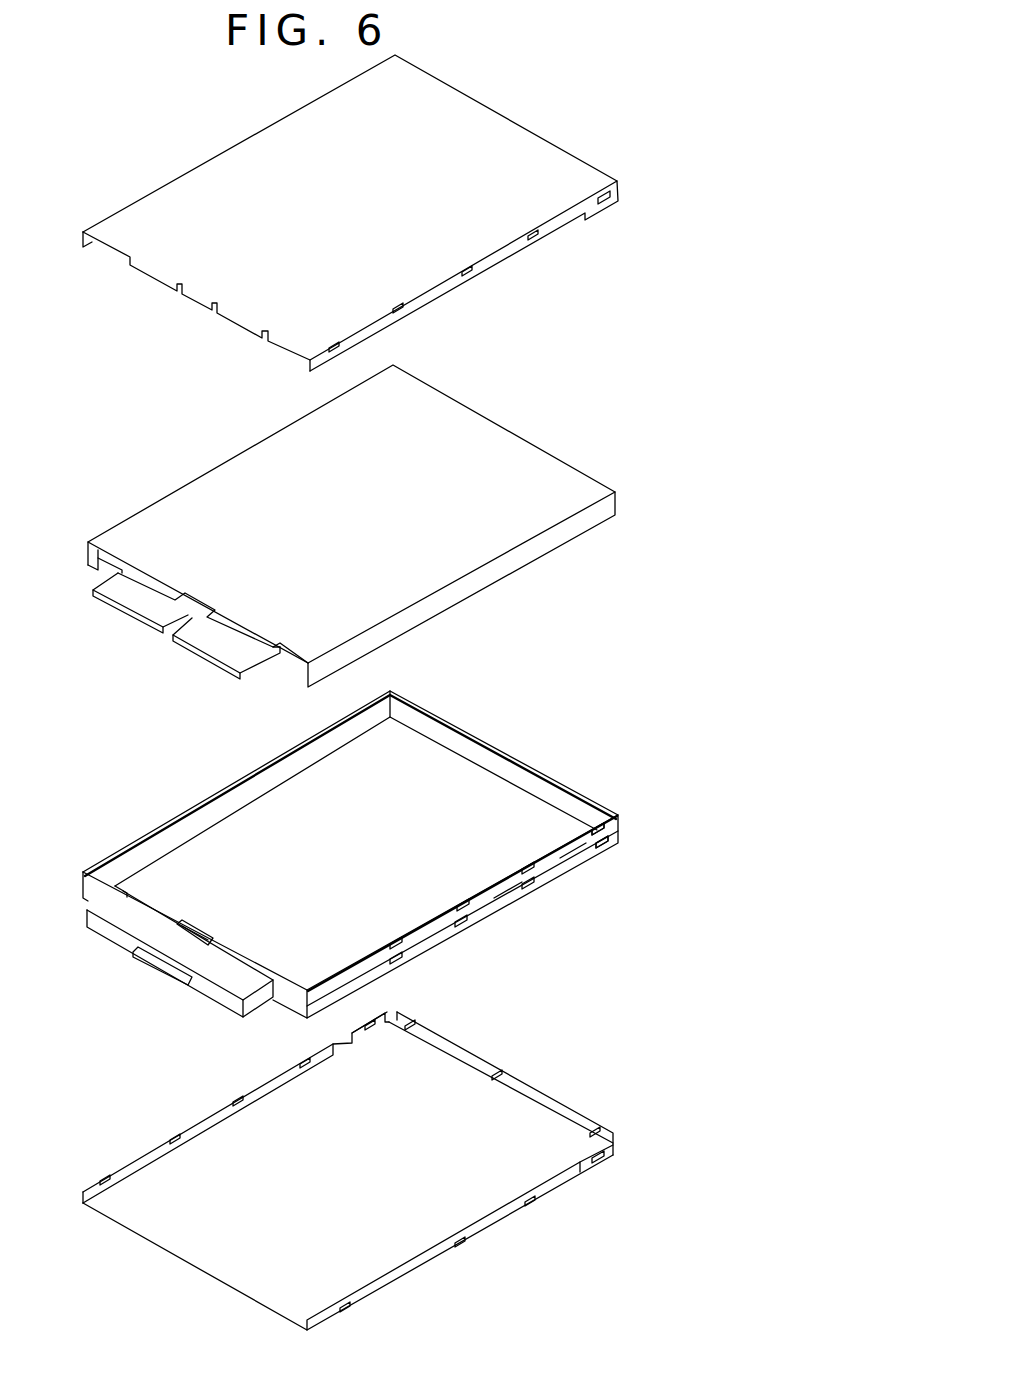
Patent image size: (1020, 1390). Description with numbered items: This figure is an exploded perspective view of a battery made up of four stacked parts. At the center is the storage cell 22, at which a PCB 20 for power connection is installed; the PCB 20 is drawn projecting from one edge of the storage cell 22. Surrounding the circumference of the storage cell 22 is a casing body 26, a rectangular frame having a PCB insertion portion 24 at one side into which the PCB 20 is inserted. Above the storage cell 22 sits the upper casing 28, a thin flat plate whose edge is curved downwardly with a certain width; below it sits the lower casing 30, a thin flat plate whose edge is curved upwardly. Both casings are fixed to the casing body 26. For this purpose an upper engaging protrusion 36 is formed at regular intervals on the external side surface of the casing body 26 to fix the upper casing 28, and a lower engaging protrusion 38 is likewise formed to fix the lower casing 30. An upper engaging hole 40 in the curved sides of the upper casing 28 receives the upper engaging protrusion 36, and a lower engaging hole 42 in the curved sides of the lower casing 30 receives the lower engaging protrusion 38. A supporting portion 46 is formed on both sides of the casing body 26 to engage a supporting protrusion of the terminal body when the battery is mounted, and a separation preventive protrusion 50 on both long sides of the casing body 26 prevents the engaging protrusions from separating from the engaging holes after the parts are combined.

The PCB 20 is at (147, 607).
The storage cell 22 is at (517, 430).
The PCB insertion portion 24 is at (218, 993).
The casing body 26 is at (513, 747).
The upper casing 28 is at (546, 130).
The lower casing 30 is at (548, 1087).
The upper engaging protrusion 36 is at (620, 820).
The lower engaging protrusion 38 is at (610, 848).
The upper engaging hole 40 is at (621, 193).
The lower engaging hole 42 is at (600, 1167).
The supporting portion 46 is at (573, 862).
The separation preventive protrusion 50 is at (508, 893).